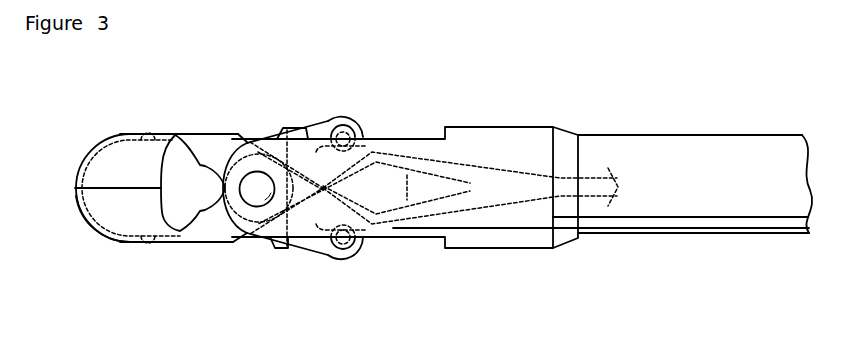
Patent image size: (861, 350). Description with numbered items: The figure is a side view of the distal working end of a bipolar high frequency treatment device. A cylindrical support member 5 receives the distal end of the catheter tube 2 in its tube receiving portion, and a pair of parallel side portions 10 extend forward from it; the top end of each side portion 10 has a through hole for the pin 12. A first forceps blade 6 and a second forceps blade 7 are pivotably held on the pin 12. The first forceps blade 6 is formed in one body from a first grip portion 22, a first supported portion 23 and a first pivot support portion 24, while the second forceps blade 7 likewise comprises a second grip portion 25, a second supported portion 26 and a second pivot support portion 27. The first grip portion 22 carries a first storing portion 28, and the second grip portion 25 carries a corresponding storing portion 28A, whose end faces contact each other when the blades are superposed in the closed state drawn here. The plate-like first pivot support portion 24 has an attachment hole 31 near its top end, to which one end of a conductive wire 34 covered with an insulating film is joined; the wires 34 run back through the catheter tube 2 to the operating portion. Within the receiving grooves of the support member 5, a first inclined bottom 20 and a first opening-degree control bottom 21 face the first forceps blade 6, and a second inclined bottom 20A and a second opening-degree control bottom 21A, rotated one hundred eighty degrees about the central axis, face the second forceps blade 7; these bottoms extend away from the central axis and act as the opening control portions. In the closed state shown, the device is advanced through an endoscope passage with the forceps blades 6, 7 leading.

The catheter tube 2 is at (702, 206).
The support member 5 is at (519, 250).
The first forceps blade 6 is at (87, 233).
The second forceps blade 7 is at (88, 142).
The side portions 10 is at (426, 229).
The pin 12 is at (246, 182).
The first inclined bottom 20 is at (283, 247).
The second inclined bottom 20A is at (286, 129).
The first opening-degree control bottom 21 is at (283, 249).
The second opening-degree control bottom 21A is at (281, 137).
The first grip portion 22 is at (126, 245).
The first supported portion 23 is at (252, 229).
The first pivot support portion 24 is at (353, 121).
The second grip portion 25 is at (132, 133).
The second supported portion 26 is at (239, 142).
The second pivot support portion 27 is at (356, 255).
The first storing portion 28 is at (151, 137).
The holding edge 28A is at (199, 244).
The attachment hole 31 is at (335, 129).
The wire 34 is at (374, 146).